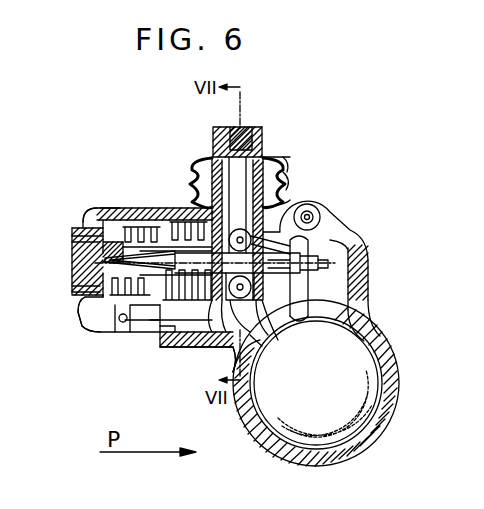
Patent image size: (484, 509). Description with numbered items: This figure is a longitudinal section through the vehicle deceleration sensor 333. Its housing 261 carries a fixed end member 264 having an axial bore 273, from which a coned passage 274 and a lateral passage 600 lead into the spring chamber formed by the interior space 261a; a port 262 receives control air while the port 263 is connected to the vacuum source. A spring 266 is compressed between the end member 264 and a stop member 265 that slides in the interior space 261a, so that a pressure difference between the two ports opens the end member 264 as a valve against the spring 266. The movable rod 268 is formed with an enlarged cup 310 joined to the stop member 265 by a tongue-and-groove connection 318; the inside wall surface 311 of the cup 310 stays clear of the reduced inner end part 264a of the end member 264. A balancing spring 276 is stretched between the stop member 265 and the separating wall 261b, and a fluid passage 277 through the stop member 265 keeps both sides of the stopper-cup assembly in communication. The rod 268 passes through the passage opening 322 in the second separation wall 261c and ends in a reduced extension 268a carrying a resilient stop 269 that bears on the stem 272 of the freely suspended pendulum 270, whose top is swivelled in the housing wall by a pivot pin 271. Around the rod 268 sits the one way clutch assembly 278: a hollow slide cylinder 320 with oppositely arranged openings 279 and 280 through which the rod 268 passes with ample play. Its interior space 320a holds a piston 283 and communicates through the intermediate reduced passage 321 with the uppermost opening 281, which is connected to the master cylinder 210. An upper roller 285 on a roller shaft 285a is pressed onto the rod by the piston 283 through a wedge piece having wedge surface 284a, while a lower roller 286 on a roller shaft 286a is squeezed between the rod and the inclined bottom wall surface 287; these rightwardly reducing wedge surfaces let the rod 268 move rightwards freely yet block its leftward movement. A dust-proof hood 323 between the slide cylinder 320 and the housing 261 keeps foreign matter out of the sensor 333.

The lateral passage 600 is at (88, 212).
The master cylinder 210 is at (108, 210).
The spring 266 is at (136, 222).
The stop member 265 is at (162, 224).
The tongue-and-groove connection 318 is at (150, 218).
The end member 264 is at (78, 230).
The reduced inner end part 264a is at (74, 240).
The axial bore 273 is at (80, 256).
The coned passage 274 is at (92, 266).
The port 262 is at (78, 291).
The housing 261 is at (85, 312).
The port 263 is at (90, 329).
The cup 310 is at (122, 333).
The inside wall surface 311 is at (140, 333).
The fluid passage 277 is at (163, 322).
The counter or balancing spring 276 is at (186, 340).
The opening 279 is at (215, 340).
The lower roller 286 is at (226, 372).
The interior space 261a is at (197, 208).
The separating wall 261b is at (205, 210).
The intermediate reduced passage 321 is at (226, 150).
The uppermost opening 281 is at (246, 130).
The interior space 320a is at (272, 165).
The one way clutch assembly 278 is at (280, 148).
The dust-proof hood 323 is at (284, 160).
The piston 283 is at (288, 176).
The slide cylinder 320 is at (290, 196).
The passage opening 322 is at (326, 261).
The reduced extension 268a is at (330, 274).
The resilient stop 269 is at (312, 286).
The movable rod 268 is at (308, 302).
The opening 280 is at (307, 320).
The upper roller 285 is at (355, 240).
The inside inclined bottom wall surface 287 is at (255, 350).
The wedge surface 284a is at (305, 210).
The roller shaft 285a is at (312, 218).
The pivot pin 271 is at (330, 226).
The stem 272 is at (362, 306).
The pendulum 270 is at (350, 395).
The second separation wall 261c is at (270, 330).
The roller shaft 286a is at (258, 338).
The deceleration sensor 333 is at (411, 117).